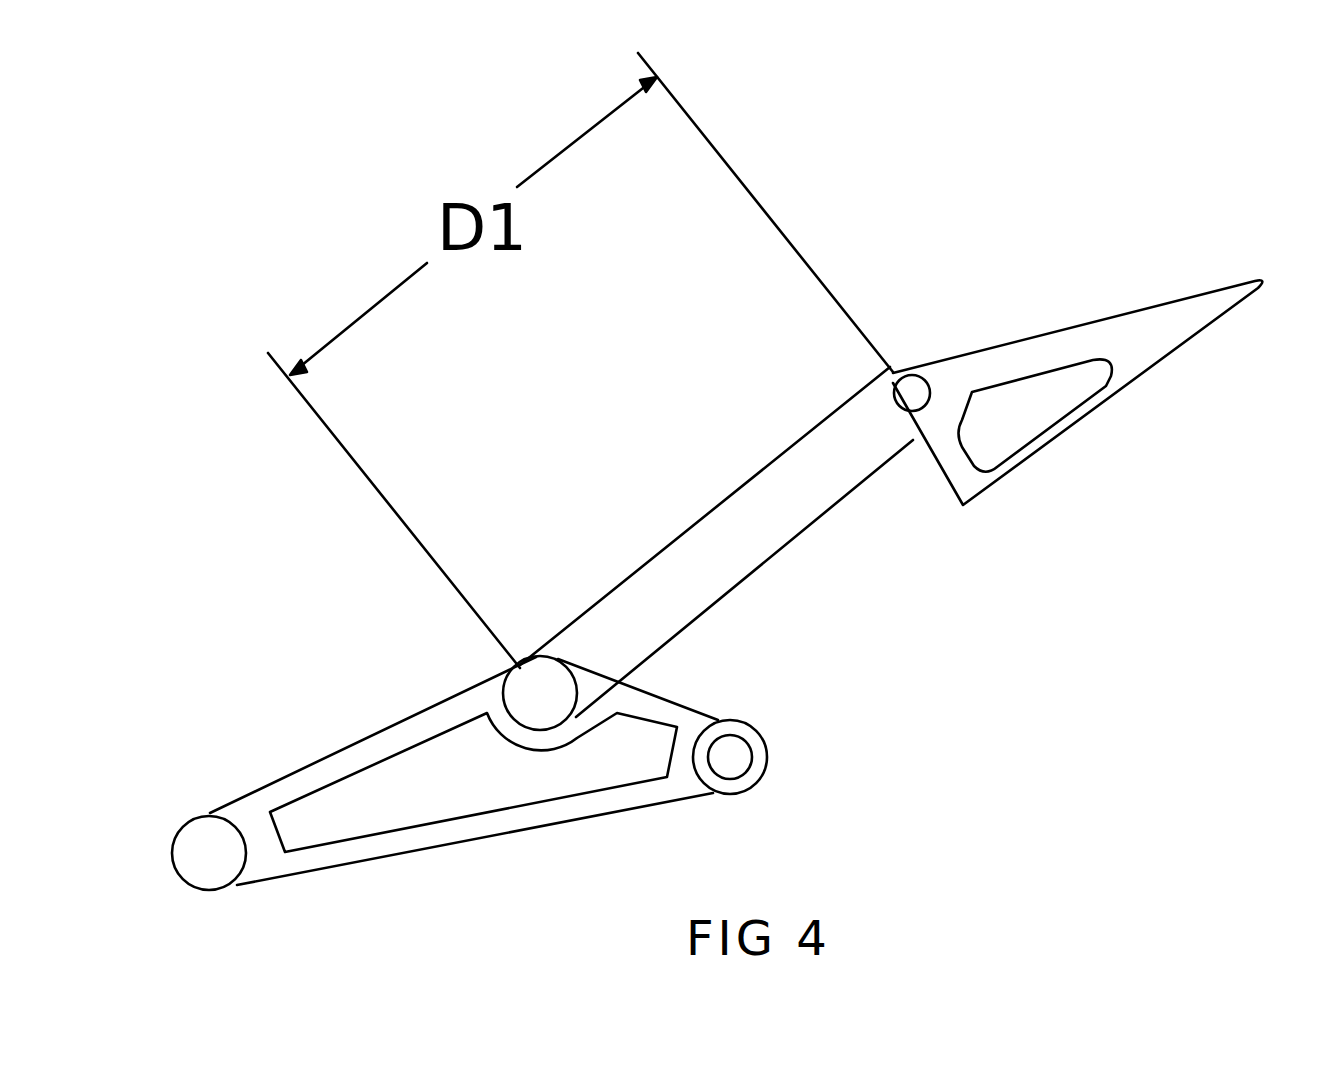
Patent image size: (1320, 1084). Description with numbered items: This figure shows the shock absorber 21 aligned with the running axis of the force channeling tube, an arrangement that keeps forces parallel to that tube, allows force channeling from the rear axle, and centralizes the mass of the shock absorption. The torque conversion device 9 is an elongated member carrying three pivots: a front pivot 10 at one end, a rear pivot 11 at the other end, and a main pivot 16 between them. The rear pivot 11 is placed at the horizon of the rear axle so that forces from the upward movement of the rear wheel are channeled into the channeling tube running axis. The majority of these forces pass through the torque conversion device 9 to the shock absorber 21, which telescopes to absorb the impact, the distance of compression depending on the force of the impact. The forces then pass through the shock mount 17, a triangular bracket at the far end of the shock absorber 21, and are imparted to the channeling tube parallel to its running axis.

The torque conversion device 9 is at (387, 745).
The front pivot of torque conversion device 10 is at (740, 763).
The rear pivot of torque conversion device 11 is at (203, 850).
The main pivot of torque conversion device 16 is at (537, 685).
The shock mount 17 is at (1138, 370).
The shock absorber 21 is at (727, 523).